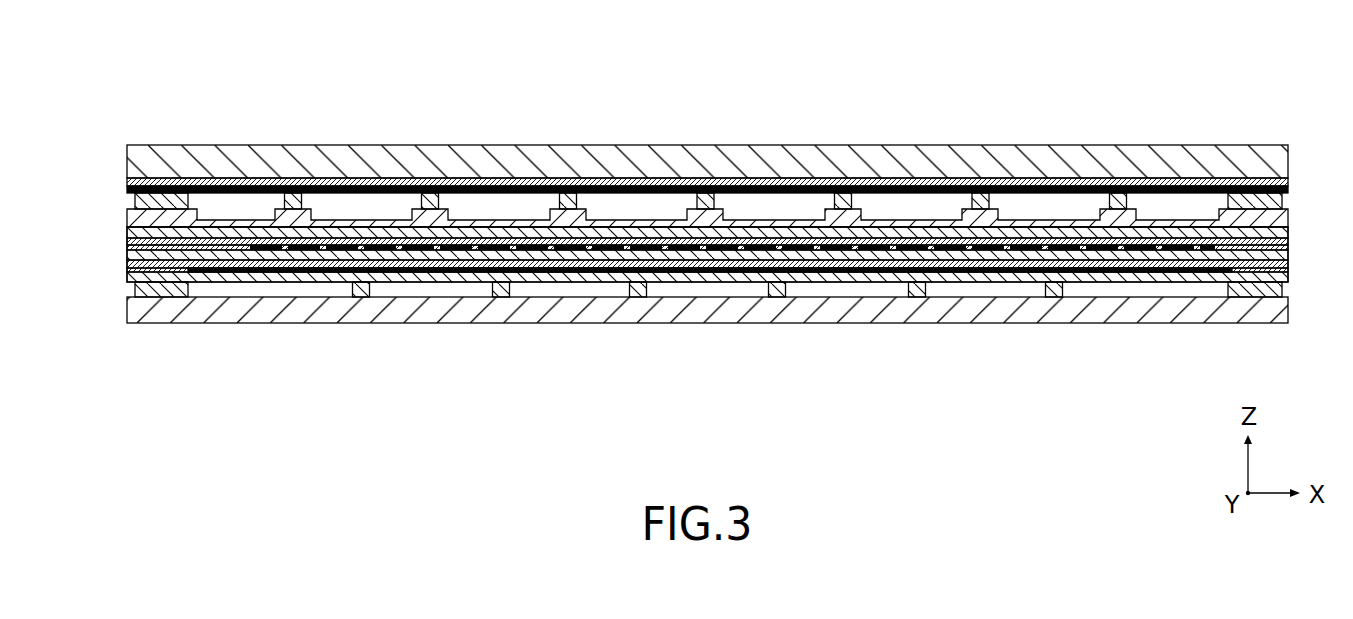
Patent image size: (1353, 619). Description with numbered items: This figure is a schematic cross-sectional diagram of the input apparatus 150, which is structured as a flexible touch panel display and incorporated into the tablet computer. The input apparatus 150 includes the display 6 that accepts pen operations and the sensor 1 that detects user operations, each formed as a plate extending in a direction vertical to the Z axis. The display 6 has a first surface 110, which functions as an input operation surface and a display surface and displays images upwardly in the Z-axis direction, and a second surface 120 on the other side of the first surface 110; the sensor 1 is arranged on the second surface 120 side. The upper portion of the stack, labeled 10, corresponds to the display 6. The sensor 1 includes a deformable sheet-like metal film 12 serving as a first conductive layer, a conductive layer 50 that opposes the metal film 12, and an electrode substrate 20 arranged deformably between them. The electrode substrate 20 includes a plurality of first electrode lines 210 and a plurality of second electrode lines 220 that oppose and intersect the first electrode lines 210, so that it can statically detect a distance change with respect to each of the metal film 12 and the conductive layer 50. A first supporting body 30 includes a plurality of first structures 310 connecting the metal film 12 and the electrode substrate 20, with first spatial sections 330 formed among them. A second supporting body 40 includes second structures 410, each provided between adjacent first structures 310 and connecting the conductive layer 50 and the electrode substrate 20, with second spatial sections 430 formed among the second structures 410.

The sensor 1 is at (1291, 180).
The display 6 is at (1290, 171).
The upper member 10 is at (122, 144).
The metal film 12 is at (1198, 198).
The electrode substrate 20 is at (122, 238).
The first supporting body 30 is at (122, 197).
The second supporting body 40 is at (122, 282).
The conductive layer 50 is at (122, 300).
The first surface 110 is at (228, 145).
The second surface 120 is at (268, 183).
The input apparatus 150 is at (984, 86).
The first electrode lines 210 is at (300, 270).
The second electrode lines 220 is at (450, 252).
The first structures 310 is at (415, 193).
The first spatial sections 330 is at (512, 206).
The second structures 410 is at (785, 285).
The second spatial sections 430 is at (707, 287).